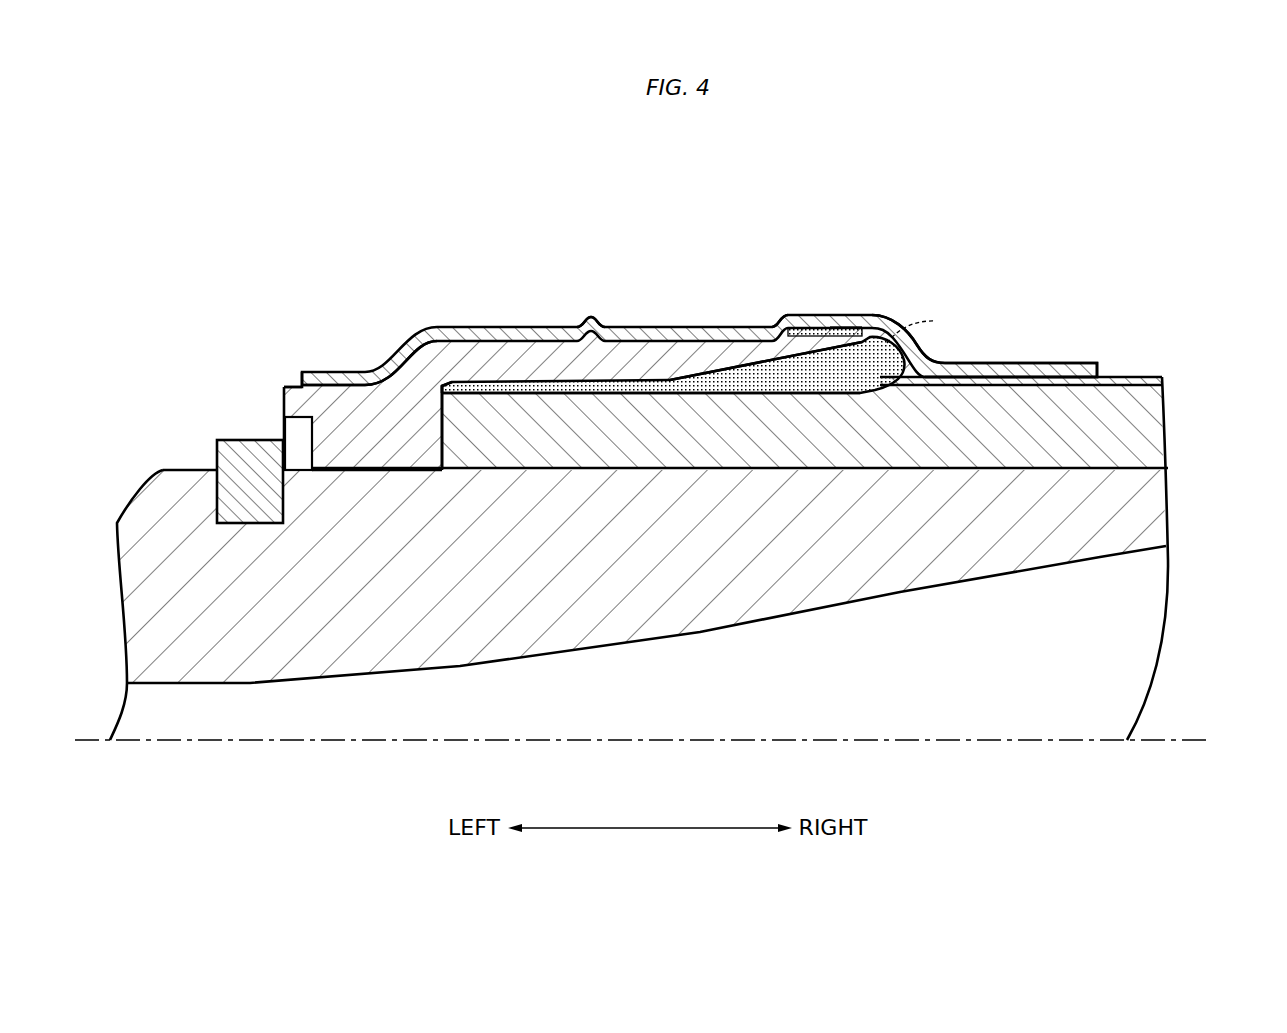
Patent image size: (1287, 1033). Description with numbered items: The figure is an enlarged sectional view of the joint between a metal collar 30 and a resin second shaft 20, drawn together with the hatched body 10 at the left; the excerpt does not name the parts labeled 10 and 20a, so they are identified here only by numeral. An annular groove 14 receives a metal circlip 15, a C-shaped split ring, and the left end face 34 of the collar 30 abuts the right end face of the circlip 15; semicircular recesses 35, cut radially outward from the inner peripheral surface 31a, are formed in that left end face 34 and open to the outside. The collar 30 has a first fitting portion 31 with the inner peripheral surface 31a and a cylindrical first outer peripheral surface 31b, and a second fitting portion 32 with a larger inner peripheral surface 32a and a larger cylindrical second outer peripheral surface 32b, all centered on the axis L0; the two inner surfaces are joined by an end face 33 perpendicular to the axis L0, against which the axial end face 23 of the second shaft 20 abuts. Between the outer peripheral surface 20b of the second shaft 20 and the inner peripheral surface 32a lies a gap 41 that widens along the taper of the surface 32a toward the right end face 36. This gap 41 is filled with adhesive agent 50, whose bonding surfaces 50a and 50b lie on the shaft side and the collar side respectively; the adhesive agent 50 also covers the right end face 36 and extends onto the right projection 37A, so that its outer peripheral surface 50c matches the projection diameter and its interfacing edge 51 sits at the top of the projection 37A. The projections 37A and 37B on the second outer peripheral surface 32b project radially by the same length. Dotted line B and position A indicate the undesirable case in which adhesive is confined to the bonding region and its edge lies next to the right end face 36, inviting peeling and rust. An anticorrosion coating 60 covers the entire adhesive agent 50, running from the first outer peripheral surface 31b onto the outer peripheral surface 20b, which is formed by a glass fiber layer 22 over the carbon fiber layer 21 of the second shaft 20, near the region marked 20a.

The base body 10 is at (125, 492).
The annular groove 14 is at (240, 523).
The circlip 15 is at (230, 452).
The second shaft 20 is at (828, 365).
The lower surface of head portion 20a is at (794, 470).
The outer peripheral surface 20b is at (470, 385).
The CF layer 21 is at (1130, 424).
The GF layer 22 is at (1135, 379).
The axial direction end face 23 is at (442, 432).
The collar 30 is at (499, 338).
The first fitting portion 31 is at (338, 408).
The inner peripheral surface 31a is at (372, 472).
The first outer peripheral surface 31b is at (342, 375).
The second fitting portion 32 is at (641, 352).
The inner peripheral surface 32a is at (540, 393).
The second outer peripheral surface 32b is at (678, 337).
The end face 33 is at (442, 433).
The left end face 34 is at (283, 403).
The recesses 35 is at (298, 432).
The right end face 36 is at (871, 318).
The projection 37A is at (780, 327).
The projection 37B is at (580, 326).
The gap 41 is at (620, 385).
The adhesive agent 50 is at (822, 393).
The bonding surface 50a is at (717, 393).
The bonding surface 50b is at (700, 393).
The outer peripheral surface 50c is at (842, 327).
The interfacing edge 51 is at (793, 328).
The anticorrosion coating 60 is at (957, 360).
The position A is at (878, 332).
The dotted line B is at (920, 326).
The axis L0 is at (659, 741).